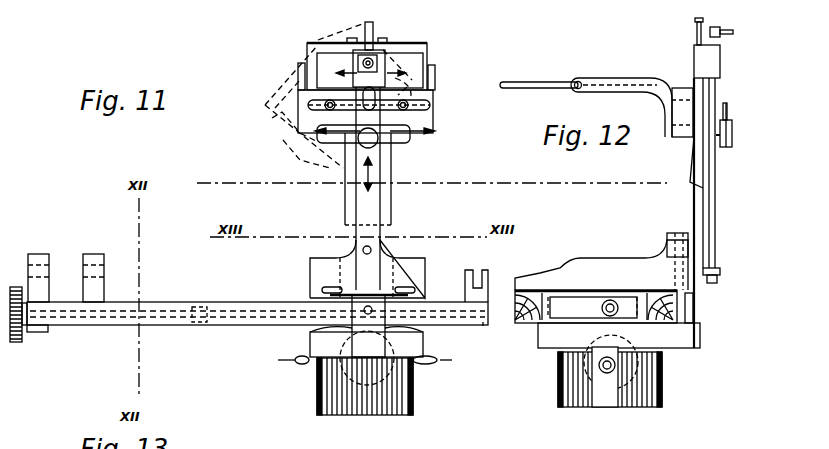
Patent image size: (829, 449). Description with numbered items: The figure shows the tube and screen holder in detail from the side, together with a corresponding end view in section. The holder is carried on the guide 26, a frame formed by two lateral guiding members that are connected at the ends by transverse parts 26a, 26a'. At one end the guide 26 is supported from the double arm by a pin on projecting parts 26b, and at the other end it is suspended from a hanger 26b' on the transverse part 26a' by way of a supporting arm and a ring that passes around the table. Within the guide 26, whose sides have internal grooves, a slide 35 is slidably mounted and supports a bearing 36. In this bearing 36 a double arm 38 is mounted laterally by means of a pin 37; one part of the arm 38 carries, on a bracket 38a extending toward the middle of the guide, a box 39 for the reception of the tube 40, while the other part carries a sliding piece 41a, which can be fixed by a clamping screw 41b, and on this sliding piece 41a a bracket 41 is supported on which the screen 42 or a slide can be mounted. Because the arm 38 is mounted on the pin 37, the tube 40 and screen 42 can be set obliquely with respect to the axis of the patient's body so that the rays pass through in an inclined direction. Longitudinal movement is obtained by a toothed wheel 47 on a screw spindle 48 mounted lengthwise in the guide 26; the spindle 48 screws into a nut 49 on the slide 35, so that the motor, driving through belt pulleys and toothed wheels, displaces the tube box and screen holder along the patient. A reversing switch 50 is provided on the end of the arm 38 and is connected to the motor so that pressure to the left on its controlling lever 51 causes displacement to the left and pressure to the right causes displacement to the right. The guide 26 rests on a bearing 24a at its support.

In FIG. 12, the bearing 24a is at (530, 320).
In FIG. 11, the guide 26 is at (178, 320).
In FIG. 11, the transverse part 26a is at (59, 338).
In FIG. 11, the projecting part 26b is at (77, 263).
In FIG. 11, the transverse part 26a' is at (489, 346).
In FIG. 11, the hanger 26b' is at (494, 274).
In FIG. 11, the slide 35 is at (248, 320).
In FIG. 12, the slide 35 is at (577, 290).
In FIG. 11, the bearing 36 is at (318, 272).
In FIG. 12, the bearing 36 is at (613, 270).
In FIG. 12, the pin 37 is at (673, 250).
In FIG. 11, the double arm 38 is at (382, 235).
In FIG. 12, the double arm 38 is at (693, 220).
In FIG. 12, the bracket 38a is at (682, 340).
In FIG. 11, the box 39 is at (407, 403).
In FIG. 12, the box 39 is at (650, 407).
In FIG. 11, the tube 40 is at (433, 358).
In FIG. 12, the tube 40 is at (610, 397).
In FIG. 12, the bracket 41 is at (642, 78).
In FIG. 12, the sliding piece 41a is at (697, 113).
In FIG. 12, the clamping screw 41b is at (710, 138).
In FIG. 12, the screen 42 is at (553, 87).
In FIG. 11, the toothed wheel 47 is at (22, 338).
In FIG. 12, the screw spindle 48 is at (563, 363).
In FIG. 12, the nut 49 is at (607, 313).
In FIG. 11, the reversing switch 50 is at (375, 60).
In FIG. 11, the controlling lever 51 is at (373, 30).
In FIG. 12, the controlling lever 51 is at (695, 32).